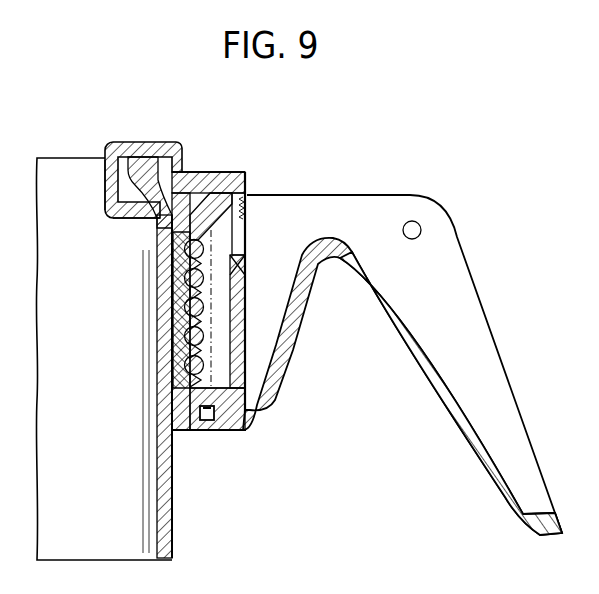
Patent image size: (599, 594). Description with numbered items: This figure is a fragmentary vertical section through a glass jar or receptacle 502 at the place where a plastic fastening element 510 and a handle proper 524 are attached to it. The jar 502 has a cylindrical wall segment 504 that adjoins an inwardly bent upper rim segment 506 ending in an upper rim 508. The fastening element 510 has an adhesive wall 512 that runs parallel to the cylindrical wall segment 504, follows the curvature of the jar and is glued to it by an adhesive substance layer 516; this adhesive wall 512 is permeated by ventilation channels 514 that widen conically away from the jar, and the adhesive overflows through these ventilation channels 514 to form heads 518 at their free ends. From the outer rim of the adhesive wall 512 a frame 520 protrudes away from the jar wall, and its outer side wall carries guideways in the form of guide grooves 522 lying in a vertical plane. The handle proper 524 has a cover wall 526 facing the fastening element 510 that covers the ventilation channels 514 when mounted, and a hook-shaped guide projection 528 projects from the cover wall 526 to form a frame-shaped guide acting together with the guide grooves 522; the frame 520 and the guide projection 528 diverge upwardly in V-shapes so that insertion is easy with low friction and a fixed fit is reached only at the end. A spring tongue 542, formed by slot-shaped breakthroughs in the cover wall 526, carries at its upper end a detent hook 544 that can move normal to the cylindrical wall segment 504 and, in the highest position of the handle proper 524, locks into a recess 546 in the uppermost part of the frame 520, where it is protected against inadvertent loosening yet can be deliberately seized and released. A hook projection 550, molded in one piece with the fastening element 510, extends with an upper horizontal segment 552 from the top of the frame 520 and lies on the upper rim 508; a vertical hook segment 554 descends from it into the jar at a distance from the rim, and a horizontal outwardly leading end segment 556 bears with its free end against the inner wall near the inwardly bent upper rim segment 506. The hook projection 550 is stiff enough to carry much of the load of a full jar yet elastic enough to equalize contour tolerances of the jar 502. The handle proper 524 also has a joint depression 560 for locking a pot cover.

The jar 502 is at (178, 542).
The cylindrical wall segment 504 is at (164, 506).
The inwardly bent upper rim segment 506 is at (108, 194).
The upper rim 508 is at (63, 157).
The fastening element 510 is at (190, 128).
The adhesive wall 512 is at (173, 350).
The ventilation channels 514 is at (192, 306).
The adhesive substance layer 516 is at (172, 244).
The heads 518 is at (202, 308).
The frame 520 is at (222, 344).
The guide grooves 522 is at (207, 425).
The handle proper 524 is at (472, 251).
The cover wall 526 is at (237, 378).
The guide projection 528 is at (201, 424).
The spring tongue 542 is at (243, 217).
The detent hook 544 is at (231, 184).
The recess 546 is at (221, 171).
The hook projection 550 is at (148, 137).
The upper horizontal segment 552 is at (115, 142).
The vertical hook segment 554 is at (106, 174).
The end segment 556 is at (132, 220).
The joint depression 560 is at (411, 222).